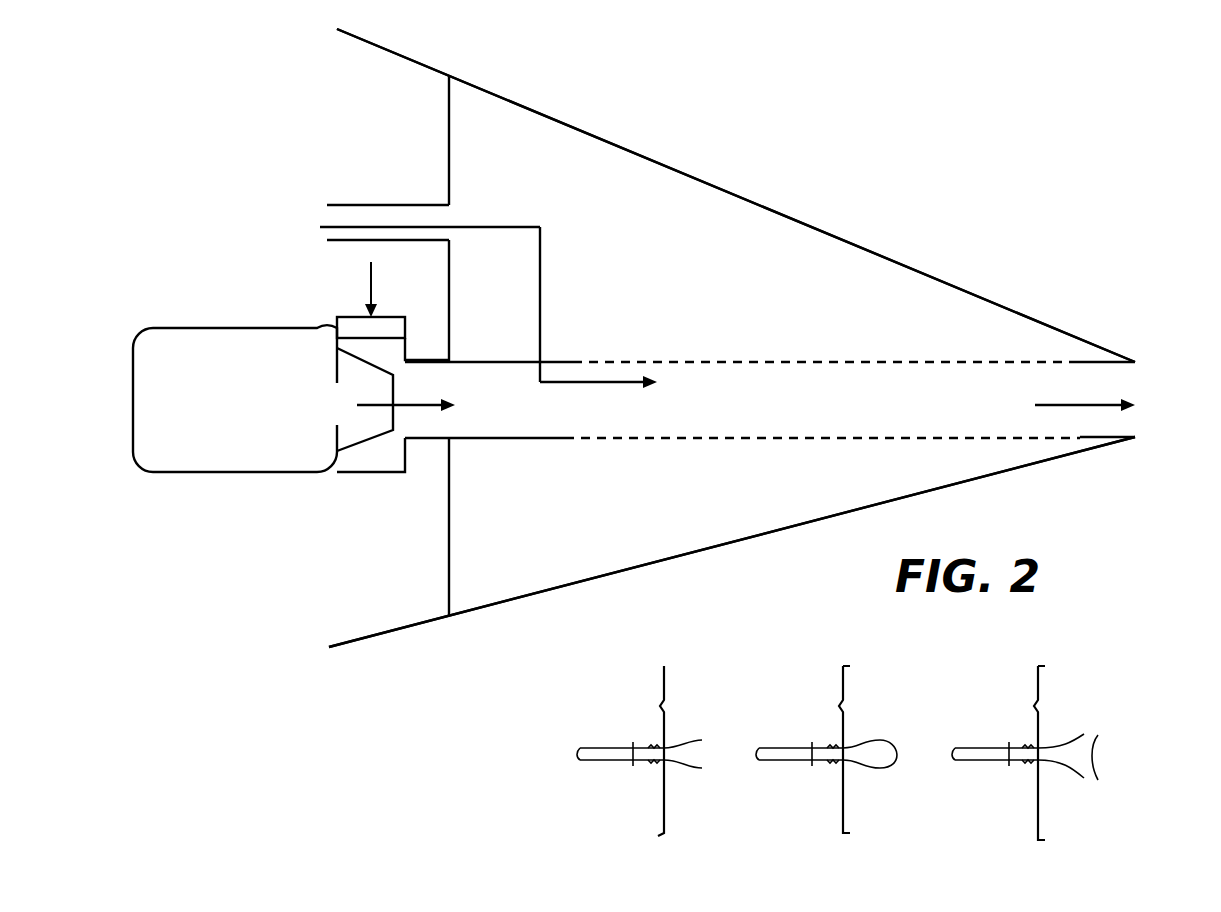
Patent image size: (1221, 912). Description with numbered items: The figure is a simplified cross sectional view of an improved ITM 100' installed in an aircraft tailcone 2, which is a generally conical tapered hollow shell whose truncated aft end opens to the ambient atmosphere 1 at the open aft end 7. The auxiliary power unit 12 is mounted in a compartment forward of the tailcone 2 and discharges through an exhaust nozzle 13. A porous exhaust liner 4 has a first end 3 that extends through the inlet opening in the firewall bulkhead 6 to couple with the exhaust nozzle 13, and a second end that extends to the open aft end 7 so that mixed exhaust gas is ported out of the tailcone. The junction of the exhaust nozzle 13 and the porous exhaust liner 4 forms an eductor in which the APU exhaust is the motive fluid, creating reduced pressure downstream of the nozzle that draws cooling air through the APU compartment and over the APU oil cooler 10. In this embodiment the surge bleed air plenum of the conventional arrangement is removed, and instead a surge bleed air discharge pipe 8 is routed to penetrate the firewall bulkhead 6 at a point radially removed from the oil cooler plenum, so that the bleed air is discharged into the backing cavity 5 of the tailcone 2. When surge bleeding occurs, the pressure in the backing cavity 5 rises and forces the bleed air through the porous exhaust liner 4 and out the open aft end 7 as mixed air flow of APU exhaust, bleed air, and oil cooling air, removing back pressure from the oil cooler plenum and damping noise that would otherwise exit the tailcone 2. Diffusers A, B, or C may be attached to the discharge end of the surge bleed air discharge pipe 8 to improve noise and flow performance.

The improved ITM 100' is at (732, 338).
The ambient atmosphere 1 is at (1200, 409).
The aircraft tailcone 2 is at (698, 180).
The first end 3 is at (385, 280).
The porous exhaust liner 4 is at (682, 362).
The backing cavity 5 is at (719, 262).
The firewall bulkhead 6 is at (449, 140).
The open aft end 7 is at (1108, 362).
The surge bleed air discharge pipe 8 is at (334, 205).
The APU oil cooler 10 is at (348, 316).
The auxiliary power unit 12 is at (196, 359).
The exhaust nozzle 13 is at (376, 394).